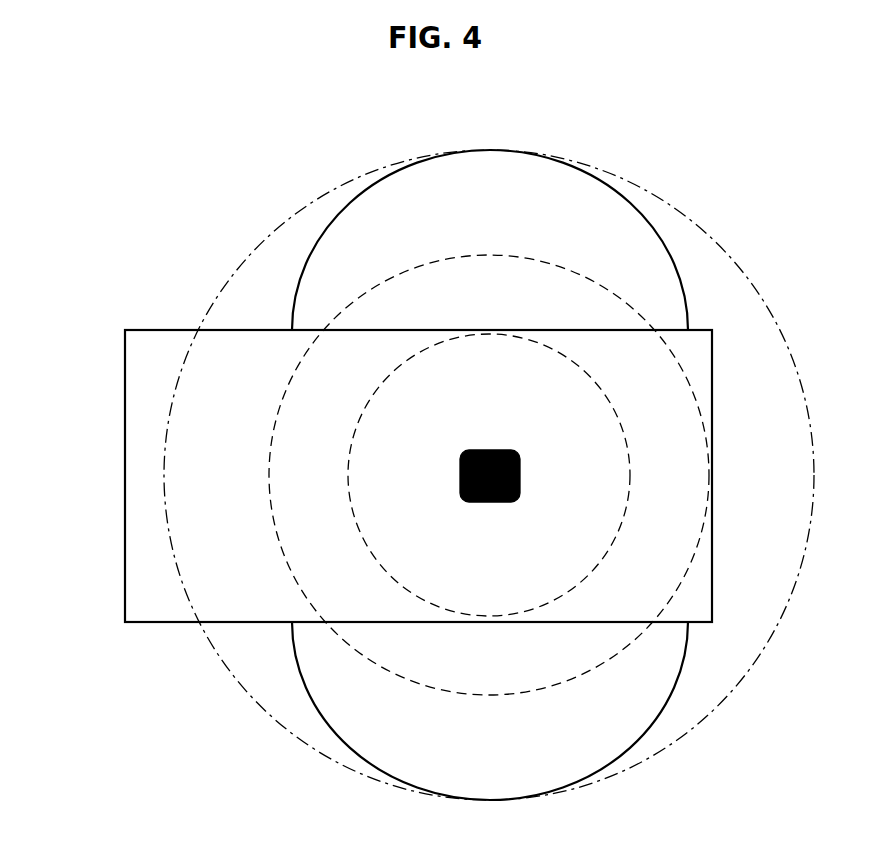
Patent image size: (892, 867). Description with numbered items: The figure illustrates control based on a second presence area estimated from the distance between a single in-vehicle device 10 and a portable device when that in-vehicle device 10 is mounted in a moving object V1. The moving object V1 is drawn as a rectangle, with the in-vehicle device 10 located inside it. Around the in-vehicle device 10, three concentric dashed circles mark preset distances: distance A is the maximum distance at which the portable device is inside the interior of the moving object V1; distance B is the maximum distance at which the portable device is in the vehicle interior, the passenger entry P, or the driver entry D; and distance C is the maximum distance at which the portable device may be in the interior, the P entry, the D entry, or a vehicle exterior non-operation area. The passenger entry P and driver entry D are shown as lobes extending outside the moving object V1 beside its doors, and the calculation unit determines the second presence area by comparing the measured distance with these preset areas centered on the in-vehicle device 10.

The in-vehicle device 10 is at (490, 450).
The passenger entry P is at (665, 243).
The driver entry D is at (667, 708).
The moving object V1 is at (125, 475).
The distance A is at (484, 475).
The distance B is at (484, 475).
The distance C is at (484, 475).